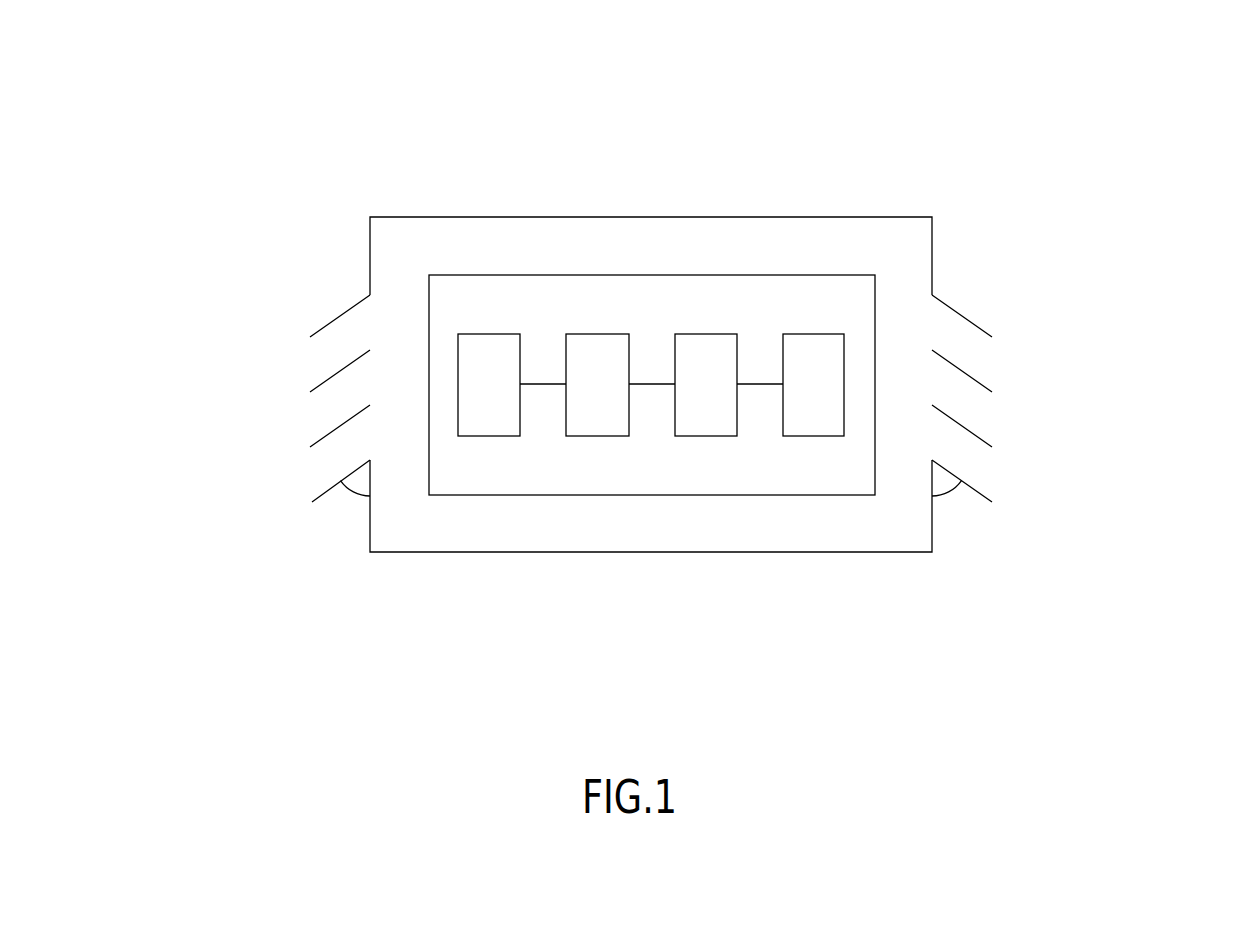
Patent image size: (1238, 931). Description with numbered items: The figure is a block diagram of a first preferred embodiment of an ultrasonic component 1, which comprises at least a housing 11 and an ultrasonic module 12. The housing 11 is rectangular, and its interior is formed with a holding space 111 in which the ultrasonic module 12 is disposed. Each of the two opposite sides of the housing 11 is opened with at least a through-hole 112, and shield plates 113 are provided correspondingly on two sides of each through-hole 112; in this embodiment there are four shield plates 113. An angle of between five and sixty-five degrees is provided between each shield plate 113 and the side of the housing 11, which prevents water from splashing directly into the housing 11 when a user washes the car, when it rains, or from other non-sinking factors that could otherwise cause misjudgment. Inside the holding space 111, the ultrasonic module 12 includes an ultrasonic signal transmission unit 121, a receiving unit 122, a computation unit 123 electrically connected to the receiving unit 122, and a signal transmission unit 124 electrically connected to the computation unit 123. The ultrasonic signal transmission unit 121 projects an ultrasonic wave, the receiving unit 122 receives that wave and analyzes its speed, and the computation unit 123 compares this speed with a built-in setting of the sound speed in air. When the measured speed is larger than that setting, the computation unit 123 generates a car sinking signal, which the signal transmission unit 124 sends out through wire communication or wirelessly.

The ultrasonic component 1 is at (252, 257).
The housing 11 is at (832, 215).
The holding space 111 is at (610, 243).
The through-hole 112 is at (378, 322).
The shield plate 113 is at (318, 492).
The ultrasonic module 12 is at (529, 275).
The ultrasonic signal transmission unit 121 is at (488, 412).
The receiving unit 122 is at (598, 422).
The computation unit 123 is at (707, 424).
The signal transmission unit 124 is at (816, 418).